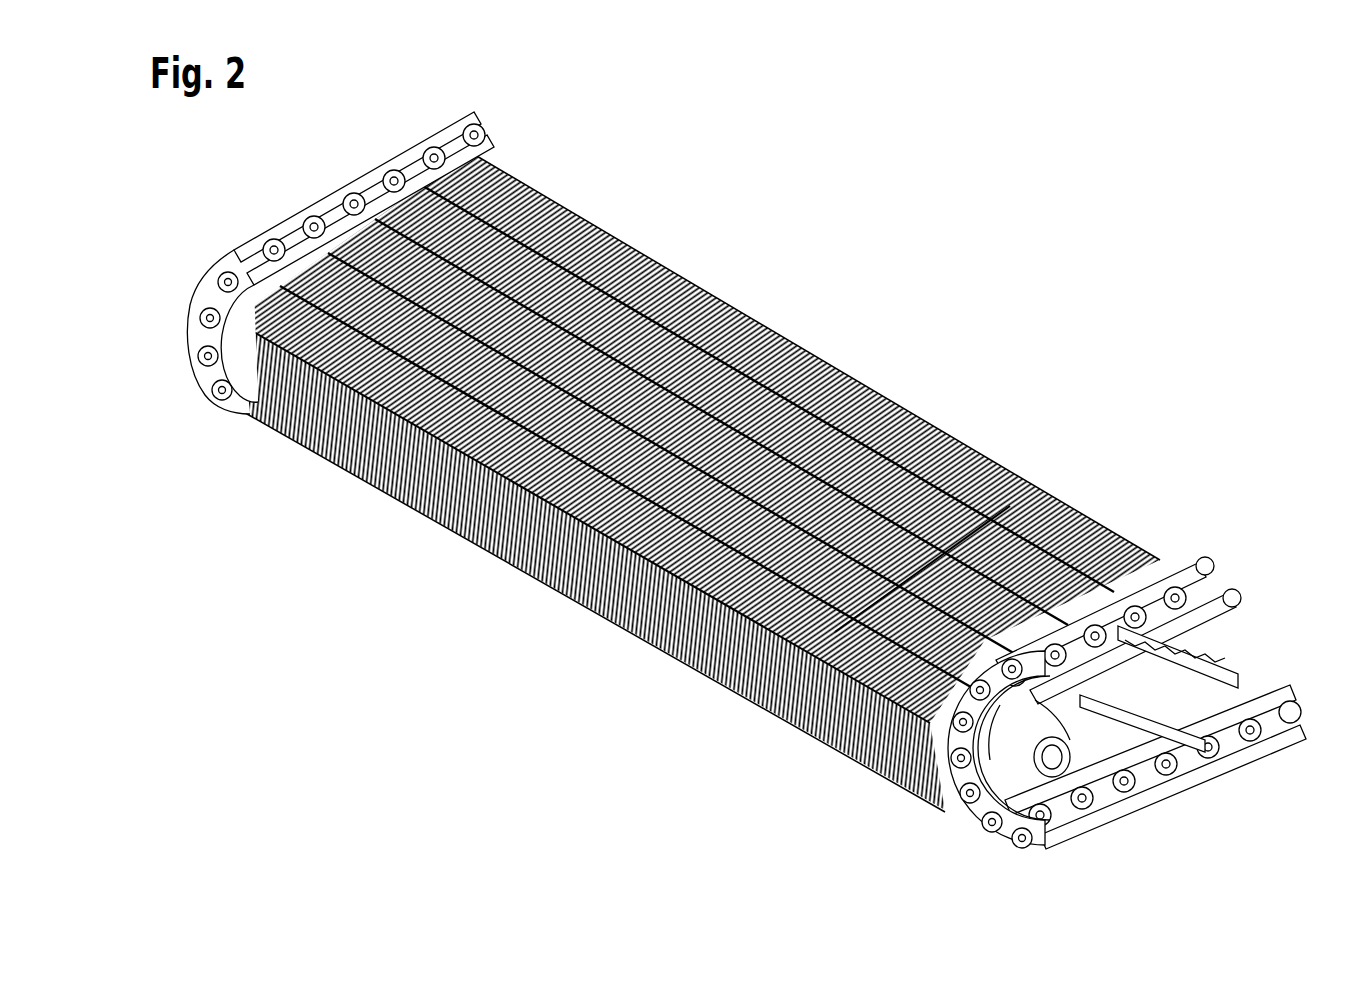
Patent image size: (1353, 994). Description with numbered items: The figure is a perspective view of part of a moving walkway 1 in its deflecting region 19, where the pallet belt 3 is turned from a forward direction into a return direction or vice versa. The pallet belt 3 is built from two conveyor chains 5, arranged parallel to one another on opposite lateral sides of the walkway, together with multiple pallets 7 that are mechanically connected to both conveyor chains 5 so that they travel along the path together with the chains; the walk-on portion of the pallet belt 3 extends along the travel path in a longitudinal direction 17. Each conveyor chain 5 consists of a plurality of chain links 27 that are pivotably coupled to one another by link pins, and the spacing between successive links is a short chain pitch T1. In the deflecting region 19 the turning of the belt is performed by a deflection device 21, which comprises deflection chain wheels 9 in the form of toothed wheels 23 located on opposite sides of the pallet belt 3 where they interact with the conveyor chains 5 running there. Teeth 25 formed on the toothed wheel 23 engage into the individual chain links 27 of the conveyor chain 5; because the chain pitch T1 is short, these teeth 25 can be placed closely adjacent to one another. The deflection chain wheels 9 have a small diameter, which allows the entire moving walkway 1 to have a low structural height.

The moving walkway 1 is at (752, 488).
The pallet belt 3 is at (696, 482).
The conveyor chain 5 is at (480, 113).
The pallet 7 is at (936, 436).
The deflection chain wheel 9 is at (1033, 777).
The longitudinal direction 17 is at (1122, 428).
The deflecting region 19 is at (1020, 863).
The deflection device 21 is at (1010, 802).
The toothed wheel 23 is at (1048, 806).
The tooth 25 is at (1100, 782).
The chain link 27 is at (1236, 666).
The chain pitch T1 is at (1316, 718).